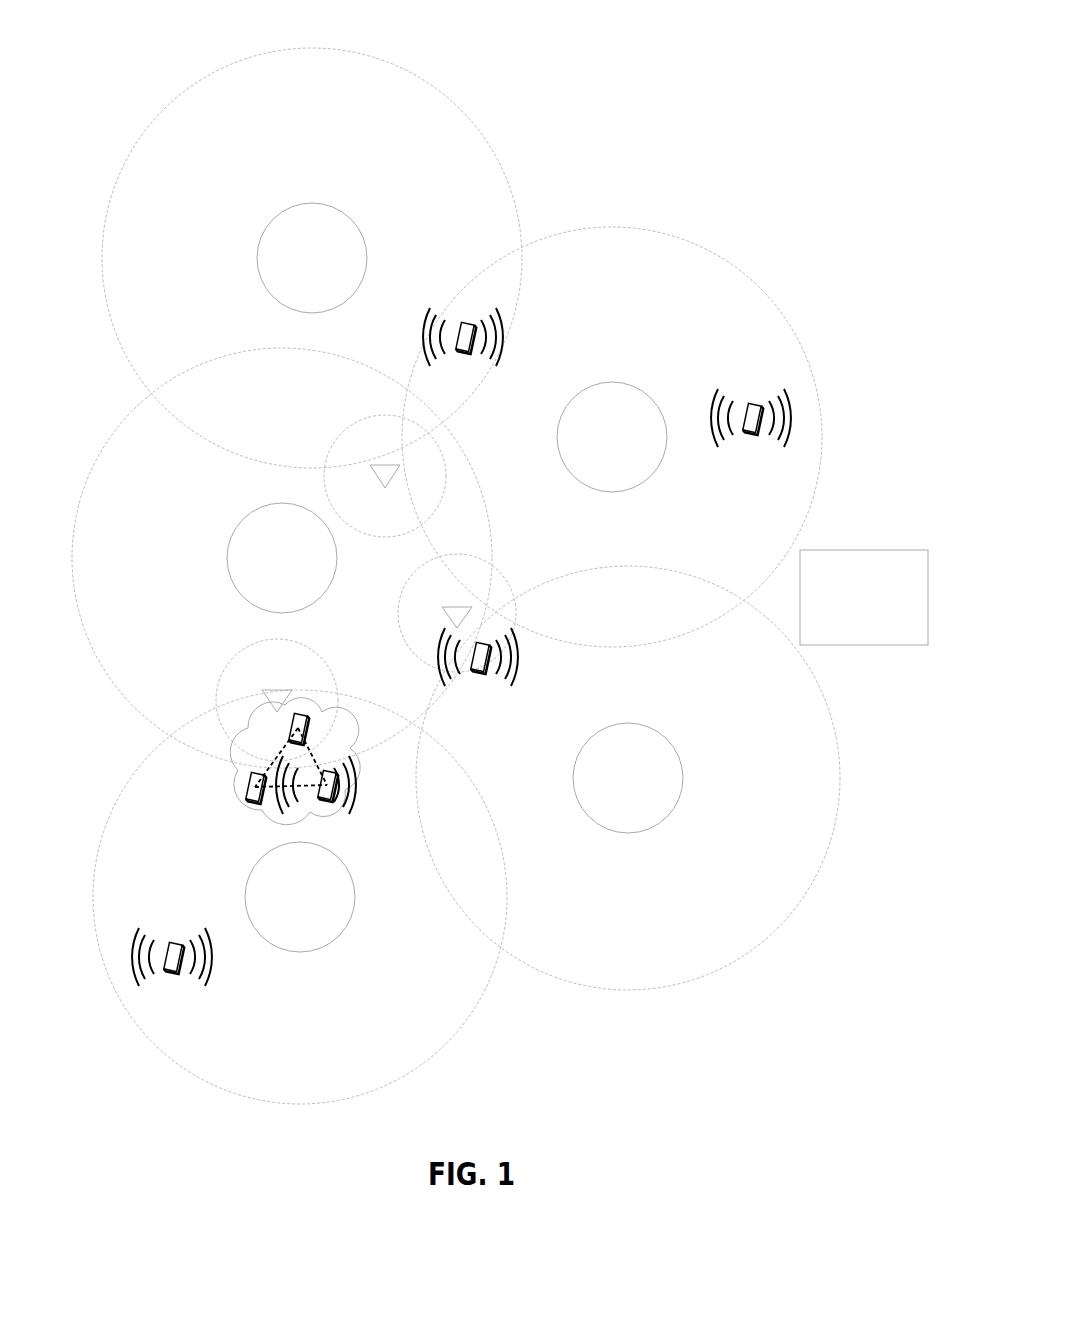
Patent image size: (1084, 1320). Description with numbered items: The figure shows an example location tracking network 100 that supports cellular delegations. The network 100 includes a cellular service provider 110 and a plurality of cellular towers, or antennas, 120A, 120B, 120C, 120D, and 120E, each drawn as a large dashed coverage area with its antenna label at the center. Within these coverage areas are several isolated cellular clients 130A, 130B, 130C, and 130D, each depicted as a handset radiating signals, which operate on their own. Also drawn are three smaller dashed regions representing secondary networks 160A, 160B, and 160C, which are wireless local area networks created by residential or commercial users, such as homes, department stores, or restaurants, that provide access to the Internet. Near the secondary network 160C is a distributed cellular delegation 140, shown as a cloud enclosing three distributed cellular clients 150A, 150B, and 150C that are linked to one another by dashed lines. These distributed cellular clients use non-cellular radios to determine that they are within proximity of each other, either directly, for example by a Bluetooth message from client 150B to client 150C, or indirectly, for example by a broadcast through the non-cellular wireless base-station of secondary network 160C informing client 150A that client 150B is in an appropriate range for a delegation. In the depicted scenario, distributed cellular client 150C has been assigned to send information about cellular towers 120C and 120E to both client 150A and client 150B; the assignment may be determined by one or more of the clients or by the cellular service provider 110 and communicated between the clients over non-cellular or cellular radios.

The location tracking network 100 is at (756, 1140).
The cellular service provider 110 is at (862, 645).
The cellular tower 120A is at (312, 258).
The cellular tower 120B is at (612, 437).
The cellular tower 120C is at (282, 558).
The cellular tower 120D is at (628, 778).
The cellular tower 120E is at (300, 897).
The isolated cellular client 130A is at (465, 323).
The isolated cellular client 130B is at (750, 434).
The isolated cellular client 130C is at (483, 673).
The isolated cellular client 130D is at (176, 943).
The distributed cellular delegation 140 is at (216, 760).
The distributed cellular client 150A is at (308, 719).
The distributed cellular client 150B is at (246, 798).
The distributed cellular client 150C is at (331, 800).
The secondary network 160A is at (347, 451).
The secondary network 160B is at (506, 599).
The secondary network 160C is at (222, 651).